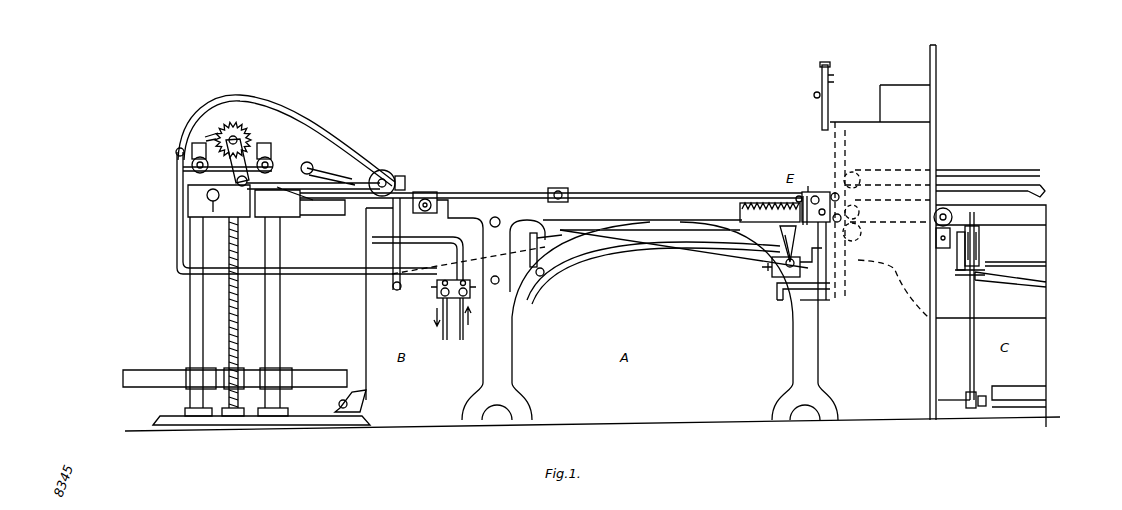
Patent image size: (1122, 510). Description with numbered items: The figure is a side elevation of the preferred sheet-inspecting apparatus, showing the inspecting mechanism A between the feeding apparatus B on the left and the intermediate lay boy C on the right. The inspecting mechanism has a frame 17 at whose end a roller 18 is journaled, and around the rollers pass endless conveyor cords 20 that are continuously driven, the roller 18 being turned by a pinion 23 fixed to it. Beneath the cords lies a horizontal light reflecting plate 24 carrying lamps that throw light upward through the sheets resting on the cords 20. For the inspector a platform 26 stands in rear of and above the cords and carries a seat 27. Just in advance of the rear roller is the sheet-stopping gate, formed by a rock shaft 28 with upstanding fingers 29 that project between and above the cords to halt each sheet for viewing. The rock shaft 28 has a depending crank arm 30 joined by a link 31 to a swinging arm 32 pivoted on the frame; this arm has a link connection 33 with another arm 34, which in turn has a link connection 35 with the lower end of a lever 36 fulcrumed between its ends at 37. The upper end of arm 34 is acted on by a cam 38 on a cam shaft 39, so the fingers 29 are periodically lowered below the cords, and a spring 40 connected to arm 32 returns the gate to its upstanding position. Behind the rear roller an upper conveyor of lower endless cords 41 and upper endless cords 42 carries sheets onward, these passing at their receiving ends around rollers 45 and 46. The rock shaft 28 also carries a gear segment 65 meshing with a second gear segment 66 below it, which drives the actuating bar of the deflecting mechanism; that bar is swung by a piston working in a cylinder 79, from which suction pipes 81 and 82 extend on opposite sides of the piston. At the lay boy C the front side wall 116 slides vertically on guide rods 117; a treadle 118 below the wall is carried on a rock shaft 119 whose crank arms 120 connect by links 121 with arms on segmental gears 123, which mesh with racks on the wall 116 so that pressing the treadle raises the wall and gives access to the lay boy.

The frame 17 is at (505, 333).
The roller 18 is at (437, 206).
The cords 20 is at (780, 198).
The pinion 23 is at (832, 72).
The light reflecting plate 24 is at (661, 241).
The platform 26 is at (912, 125).
The seat 27 is at (894, 91).
The rock shaft 28 is at (796, 197).
The fingers 29 is at (818, 196).
The crank arm 30 is at (816, 179).
The link 31 is at (744, 214).
The swinging arm 32 is at (712, 253).
The link connection 33 is at (575, 231).
The arm 34 is at (620, 249).
The link connection 35 is at (473, 254).
The lever 36 is at (375, 269).
The fulcrum 37 is at (393, 236).
The cam 38 is at (401, 178).
The cam shaft 39 is at (382, 170).
The spring 40 is at (745, 198).
The lower endless cords 41 is at (1045, 192).
The upper endless cords 42 is at (1010, 168).
The roller 45 is at (852, 197).
The roller 46 is at (857, 176).
The gear segment 65 is at (780, 229).
The gear segment 66 is at (784, 238).
The cylinder 79 is at (772, 266).
The suction pipe 81 is at (777, 291).
The suction pipe 82 is at (800, 300).
The front side wall 116 is at (1036, 245).
The guide rods 117 is at (960, 217).
The treadle 118 is at (1035, 397).
The rock shaft 119 is at (1040, 410).
The crank arms 120 is at (964, 399).
The links 121 is at (970, 332).
The segmental gears 123 is at (977, 255).